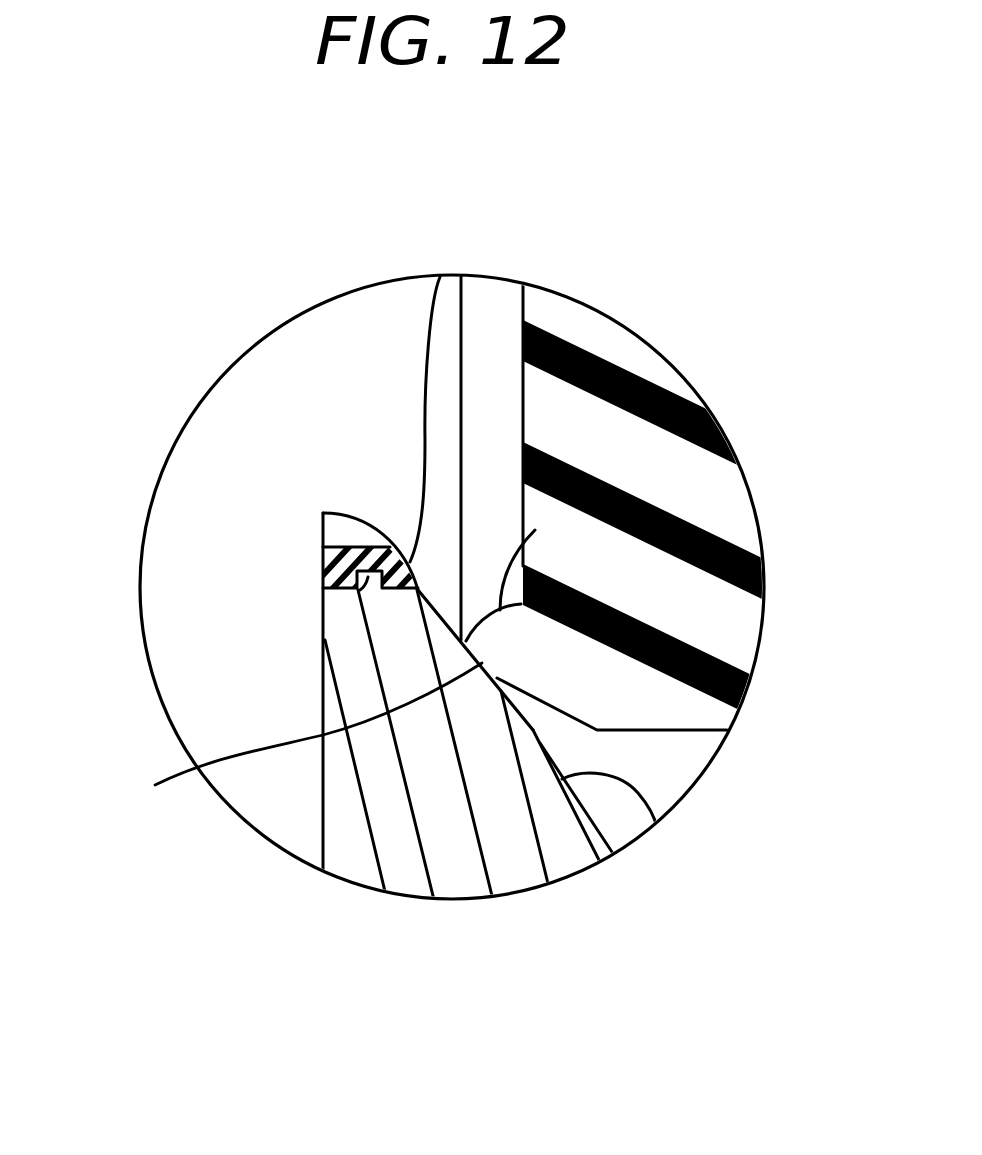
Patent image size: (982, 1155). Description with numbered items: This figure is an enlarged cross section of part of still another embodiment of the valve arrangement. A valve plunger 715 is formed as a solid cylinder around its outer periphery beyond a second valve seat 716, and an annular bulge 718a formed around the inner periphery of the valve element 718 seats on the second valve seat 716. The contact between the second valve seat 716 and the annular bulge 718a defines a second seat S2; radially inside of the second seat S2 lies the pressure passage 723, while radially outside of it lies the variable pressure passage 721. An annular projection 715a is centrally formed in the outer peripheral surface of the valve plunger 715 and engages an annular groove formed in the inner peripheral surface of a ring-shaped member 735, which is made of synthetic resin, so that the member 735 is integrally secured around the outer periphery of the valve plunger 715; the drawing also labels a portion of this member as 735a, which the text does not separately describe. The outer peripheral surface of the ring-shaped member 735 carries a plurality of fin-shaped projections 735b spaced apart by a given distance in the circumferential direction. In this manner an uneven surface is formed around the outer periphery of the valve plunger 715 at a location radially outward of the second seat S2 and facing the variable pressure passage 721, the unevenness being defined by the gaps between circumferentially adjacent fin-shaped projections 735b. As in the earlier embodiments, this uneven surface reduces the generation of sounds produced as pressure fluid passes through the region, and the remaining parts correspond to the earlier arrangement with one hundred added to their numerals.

The variable pressure passage 721 is at (228, 390).
The ring-shaped member 735 is at (337, 495).
The seal lip 735a is at (440, 277).
The fin-shaped projections 735b is at (320, 527).
The valve plunger 715 is at (308, 837).
The annular projection 715a is at (368, 578).
The valve element 718 is at (748, 642).
The annular bulge 718a is at (607, 483).
The pressure passage 723 is at (695, 762).
The second valve seat 716 is at (653, 822).
The second seat S2 is at (292, 749).